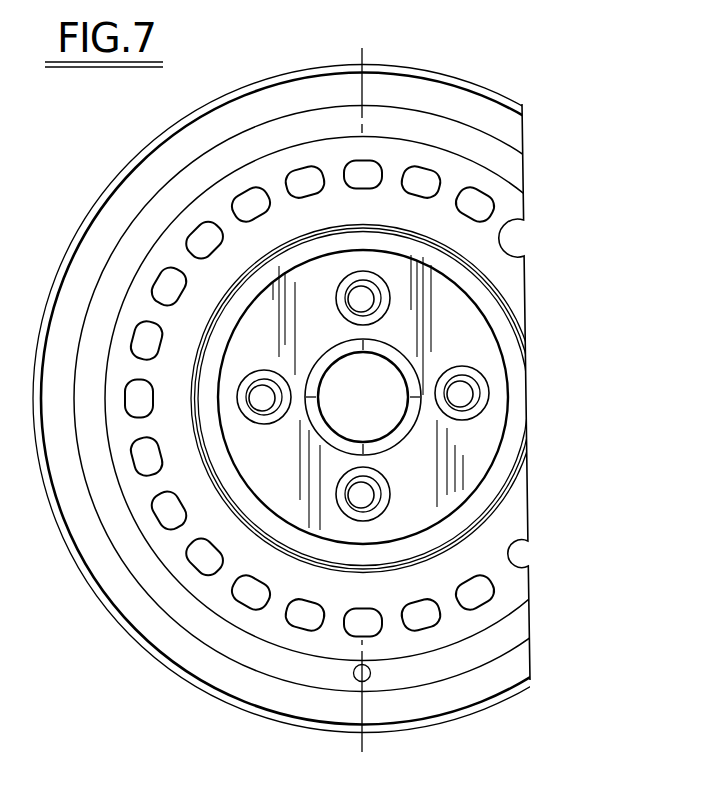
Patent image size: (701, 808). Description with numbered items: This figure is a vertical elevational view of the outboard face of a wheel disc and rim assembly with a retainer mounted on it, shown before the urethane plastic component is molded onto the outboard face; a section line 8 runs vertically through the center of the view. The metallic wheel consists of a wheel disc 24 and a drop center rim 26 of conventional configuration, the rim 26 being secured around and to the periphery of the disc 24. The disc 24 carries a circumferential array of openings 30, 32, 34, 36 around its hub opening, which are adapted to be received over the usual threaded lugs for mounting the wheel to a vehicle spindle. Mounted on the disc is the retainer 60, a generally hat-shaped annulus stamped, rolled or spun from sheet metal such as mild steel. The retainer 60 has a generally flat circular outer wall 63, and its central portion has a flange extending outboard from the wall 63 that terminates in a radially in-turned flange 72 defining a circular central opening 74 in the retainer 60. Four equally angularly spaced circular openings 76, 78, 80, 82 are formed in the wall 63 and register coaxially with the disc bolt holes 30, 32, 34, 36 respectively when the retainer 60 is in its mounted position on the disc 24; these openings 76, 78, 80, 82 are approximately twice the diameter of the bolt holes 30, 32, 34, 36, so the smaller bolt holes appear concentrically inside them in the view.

The section line 8- 8 is at (362, 55).
The wheel disc 24 is at (176, 208).
The drop center rim 26 is at (467, 78).
The opening 30 is at (265, 405).
The opening 32 is at (378, 299).
The opening 34 is at (472, 395).
The opening 36 is at (358, 500).
The retainer 60 is at (367, 243).
The outer wall 63 is at (413, 518).
The radially in-turned flange 72 is at (325, 428).
The central opening 74 is at (383, 366).
The circular opening 76 is at (258, 382).
The circular opening 78 is at (372, 277).
The circular opening 80 is at (472, 370).
The circular opening 82 is at (367, 518).